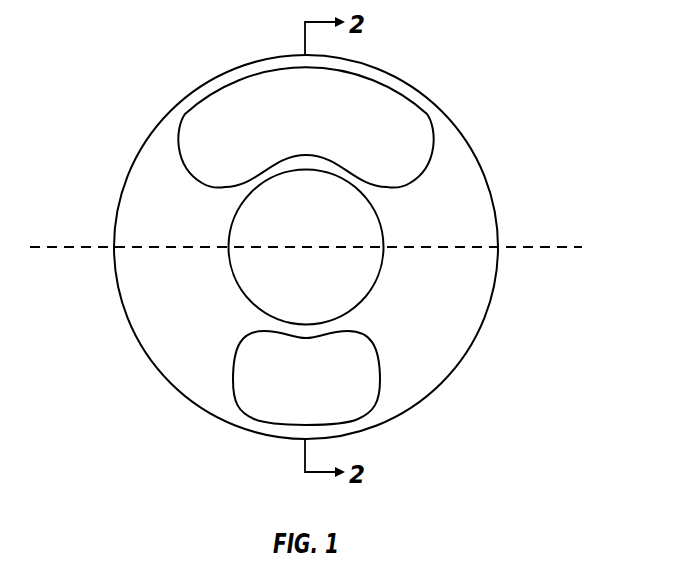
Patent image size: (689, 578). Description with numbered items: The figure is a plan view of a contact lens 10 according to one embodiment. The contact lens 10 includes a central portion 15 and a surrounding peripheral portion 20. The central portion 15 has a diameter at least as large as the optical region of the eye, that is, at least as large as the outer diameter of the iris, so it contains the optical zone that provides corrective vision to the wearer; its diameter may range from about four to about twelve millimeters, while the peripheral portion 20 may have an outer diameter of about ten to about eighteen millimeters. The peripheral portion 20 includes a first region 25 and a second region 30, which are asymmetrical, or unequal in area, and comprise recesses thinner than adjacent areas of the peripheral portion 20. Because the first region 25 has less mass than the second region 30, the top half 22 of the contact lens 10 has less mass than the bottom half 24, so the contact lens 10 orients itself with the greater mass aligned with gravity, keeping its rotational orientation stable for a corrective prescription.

The contact lens 10 is at (486, 85).
The central portion 15 is at (319, 220).
The peripheral portion 20 is at (417, 313).
The top half 22 is at (116, 203).
The bottom half 24 is at (116, 292).
The first region 25 is at (319, 123).
The second region 30 is at (293, 396).